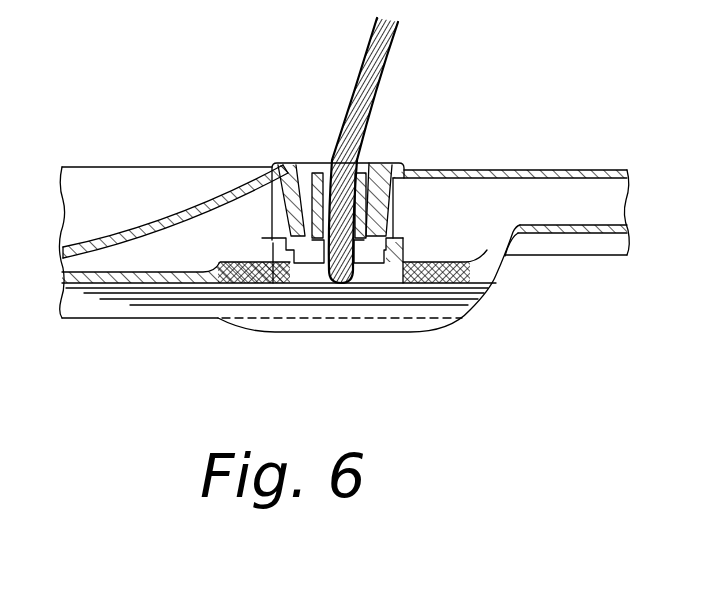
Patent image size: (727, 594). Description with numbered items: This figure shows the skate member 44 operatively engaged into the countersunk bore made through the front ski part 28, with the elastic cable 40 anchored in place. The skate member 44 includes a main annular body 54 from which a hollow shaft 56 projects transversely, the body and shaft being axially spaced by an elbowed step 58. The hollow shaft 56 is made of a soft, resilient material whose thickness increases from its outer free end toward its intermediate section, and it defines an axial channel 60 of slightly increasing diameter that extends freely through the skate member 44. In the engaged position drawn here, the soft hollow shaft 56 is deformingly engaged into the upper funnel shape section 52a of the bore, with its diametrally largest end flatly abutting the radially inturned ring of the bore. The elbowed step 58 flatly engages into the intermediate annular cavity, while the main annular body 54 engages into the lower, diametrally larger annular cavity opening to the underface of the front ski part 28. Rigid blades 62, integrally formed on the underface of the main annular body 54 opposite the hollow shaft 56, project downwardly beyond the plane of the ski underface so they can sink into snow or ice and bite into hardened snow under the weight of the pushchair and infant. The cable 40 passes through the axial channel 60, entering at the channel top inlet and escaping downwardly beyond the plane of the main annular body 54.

The front ski part 28 is at (570, 180).
The cable 40 is at (365, 54).
The skate member 44 is at (324, 336).
The upper funnel shape section 52a is at (378, 158).
The main annular body 54 is at (237, 283).
The hollow shaft 56 is at (288, 215).
The elbowed step 58 is at (403, 246).
The axial channel 60 is at (302, 176).
The blades 62 is at (430, 327).